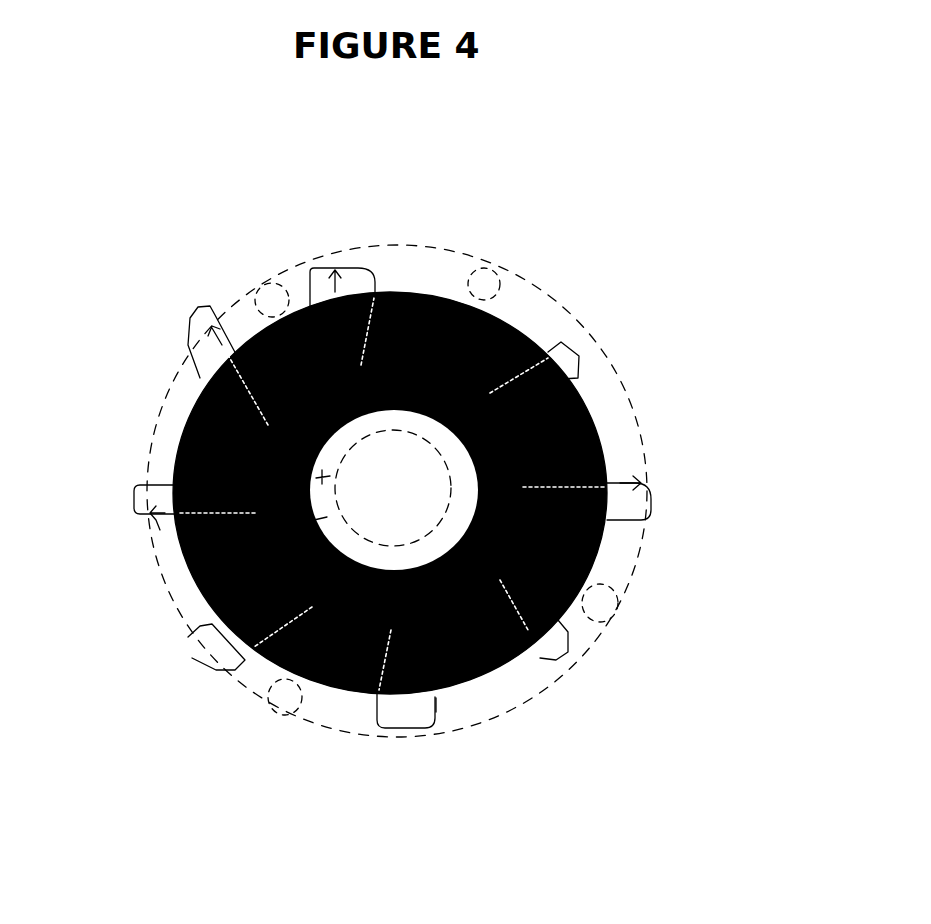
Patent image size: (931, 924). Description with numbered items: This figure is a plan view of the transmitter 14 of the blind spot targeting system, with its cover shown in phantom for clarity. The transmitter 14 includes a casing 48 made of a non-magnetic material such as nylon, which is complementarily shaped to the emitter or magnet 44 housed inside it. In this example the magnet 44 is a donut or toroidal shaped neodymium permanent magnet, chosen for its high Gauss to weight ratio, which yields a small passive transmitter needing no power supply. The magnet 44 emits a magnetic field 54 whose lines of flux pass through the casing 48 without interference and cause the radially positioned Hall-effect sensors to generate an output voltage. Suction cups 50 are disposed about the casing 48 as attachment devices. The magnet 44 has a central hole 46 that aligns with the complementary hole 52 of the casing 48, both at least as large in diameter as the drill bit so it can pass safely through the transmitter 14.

The transmitter 14 is at (446, 501).
The emitter or magnet 44 is at (585, 583).
The hole 46 is at (192, 578).
The casing 48 is at (560, 296).
The suction cups 50 is at (262, 288).
The complementary hole 52 is at (154, 447).
The magnetic field 54 is at (436, 712).